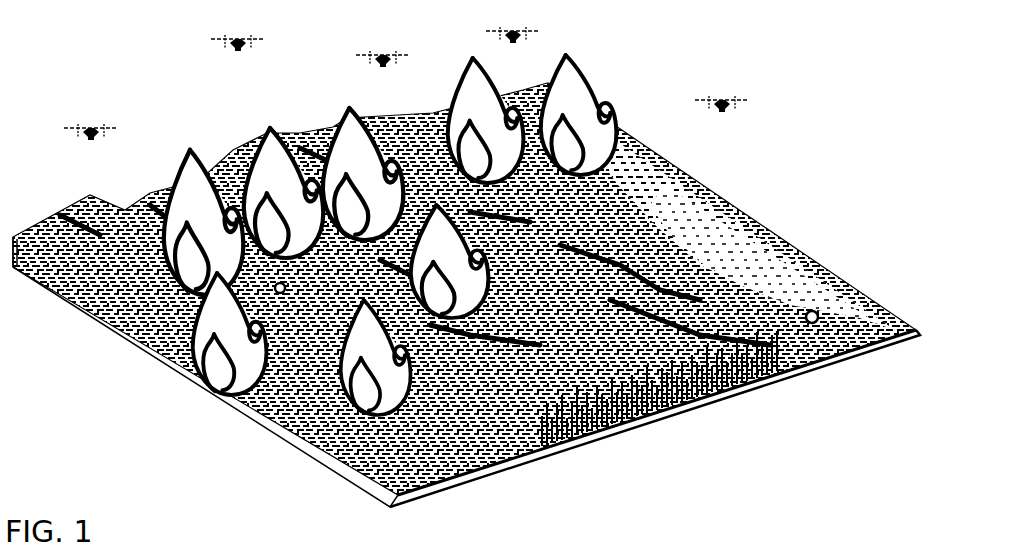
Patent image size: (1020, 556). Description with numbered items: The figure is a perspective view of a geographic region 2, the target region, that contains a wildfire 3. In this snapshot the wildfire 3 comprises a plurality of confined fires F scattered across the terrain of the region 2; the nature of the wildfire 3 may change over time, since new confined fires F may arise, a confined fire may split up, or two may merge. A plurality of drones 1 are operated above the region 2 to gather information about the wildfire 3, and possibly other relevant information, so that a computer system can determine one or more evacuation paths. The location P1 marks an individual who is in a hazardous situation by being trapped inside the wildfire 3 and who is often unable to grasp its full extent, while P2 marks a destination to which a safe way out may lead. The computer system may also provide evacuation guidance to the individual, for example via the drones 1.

The drone 1 is at (238, 35).
The geographic region 2 is at (751, 216).
The wildfire 3 is at (432, 208).
The confined fire F is at (204, 274).
The location of an individual P1 is at (222, 276).
The destination P2 is at (813, 311).